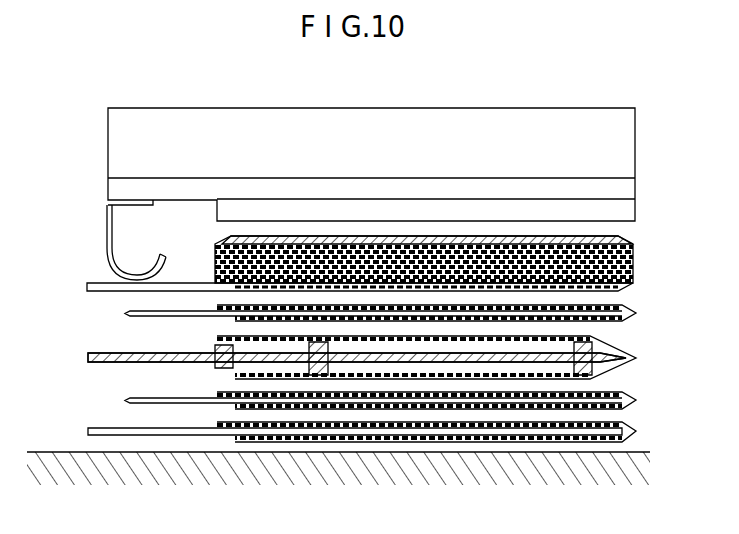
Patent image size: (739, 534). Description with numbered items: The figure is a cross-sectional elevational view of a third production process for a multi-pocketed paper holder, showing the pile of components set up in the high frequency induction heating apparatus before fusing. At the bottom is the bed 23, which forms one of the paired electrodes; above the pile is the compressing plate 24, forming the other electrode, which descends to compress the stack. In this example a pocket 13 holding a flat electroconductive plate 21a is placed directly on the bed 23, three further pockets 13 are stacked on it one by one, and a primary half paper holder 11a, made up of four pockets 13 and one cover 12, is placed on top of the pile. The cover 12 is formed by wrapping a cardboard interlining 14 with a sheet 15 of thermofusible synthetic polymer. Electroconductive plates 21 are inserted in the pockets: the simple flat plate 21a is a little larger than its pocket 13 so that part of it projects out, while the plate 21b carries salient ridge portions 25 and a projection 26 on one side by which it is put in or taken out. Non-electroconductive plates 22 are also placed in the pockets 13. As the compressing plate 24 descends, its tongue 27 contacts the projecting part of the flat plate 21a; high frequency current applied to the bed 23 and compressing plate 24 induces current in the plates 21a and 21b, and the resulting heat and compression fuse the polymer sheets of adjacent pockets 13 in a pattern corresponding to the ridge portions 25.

The primary half paper holder 11a is at (641, 241).
The cover 12 is at (255, 231).
The pocket 13 is at (215, 271).
The interlining 14 is at (325, 240).
The sheet of thermofusible synthetic polymer 15 is at (420, 237).
The electroconductive plate 21 is at (88, 285).
The flat electroconductive plate 21a is at (178, 434).
The electroconductive plate with ridge portions 21b is at (192, 362).
The non-electroconductive plate 22 is at (128, 313).
The bed 23 is at (110, 452).
The compressing plate 24 is at (535, 115).
The salient ridge portion 25 is at (328, 375).
The projection 26 is at (90, 353).
The tongue 27 is at (107, 250).